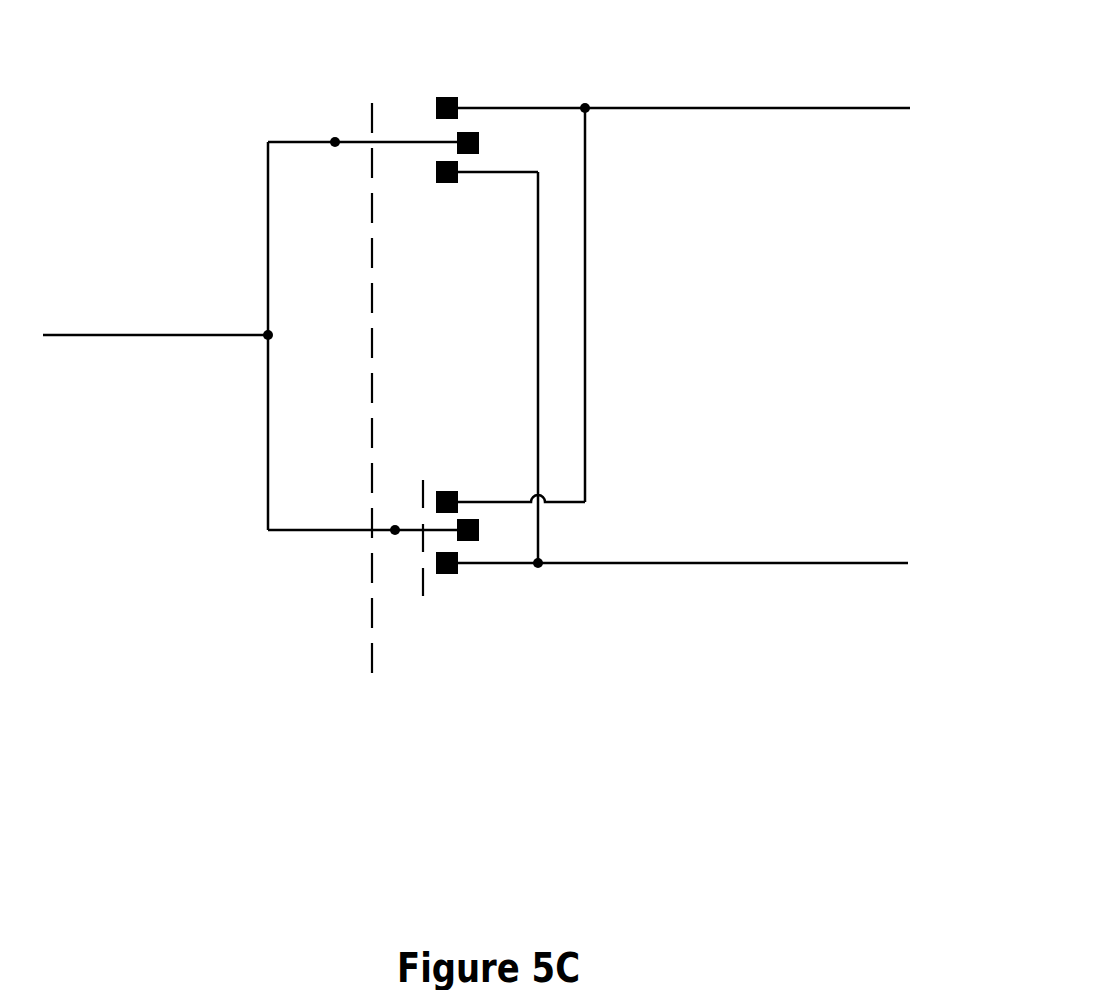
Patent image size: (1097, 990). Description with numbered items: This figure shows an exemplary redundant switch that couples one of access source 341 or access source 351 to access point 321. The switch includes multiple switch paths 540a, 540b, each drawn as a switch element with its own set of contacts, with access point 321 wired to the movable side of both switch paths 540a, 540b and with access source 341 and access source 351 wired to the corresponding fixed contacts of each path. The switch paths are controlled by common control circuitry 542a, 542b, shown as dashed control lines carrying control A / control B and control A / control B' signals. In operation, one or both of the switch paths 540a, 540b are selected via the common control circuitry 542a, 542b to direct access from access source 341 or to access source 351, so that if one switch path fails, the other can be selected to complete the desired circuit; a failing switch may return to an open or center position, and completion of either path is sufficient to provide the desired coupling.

The access point 321 is at (158, 289).
The access source 341 is at (702, 69).
The access source 351 is at (702, 523).
The switch path 540a is at (350, 133).
The switch path 540b is at (400, 490).
The common control circuitry 542a is at (367, 446).
The common control circuitry 542b is at (561, 587).